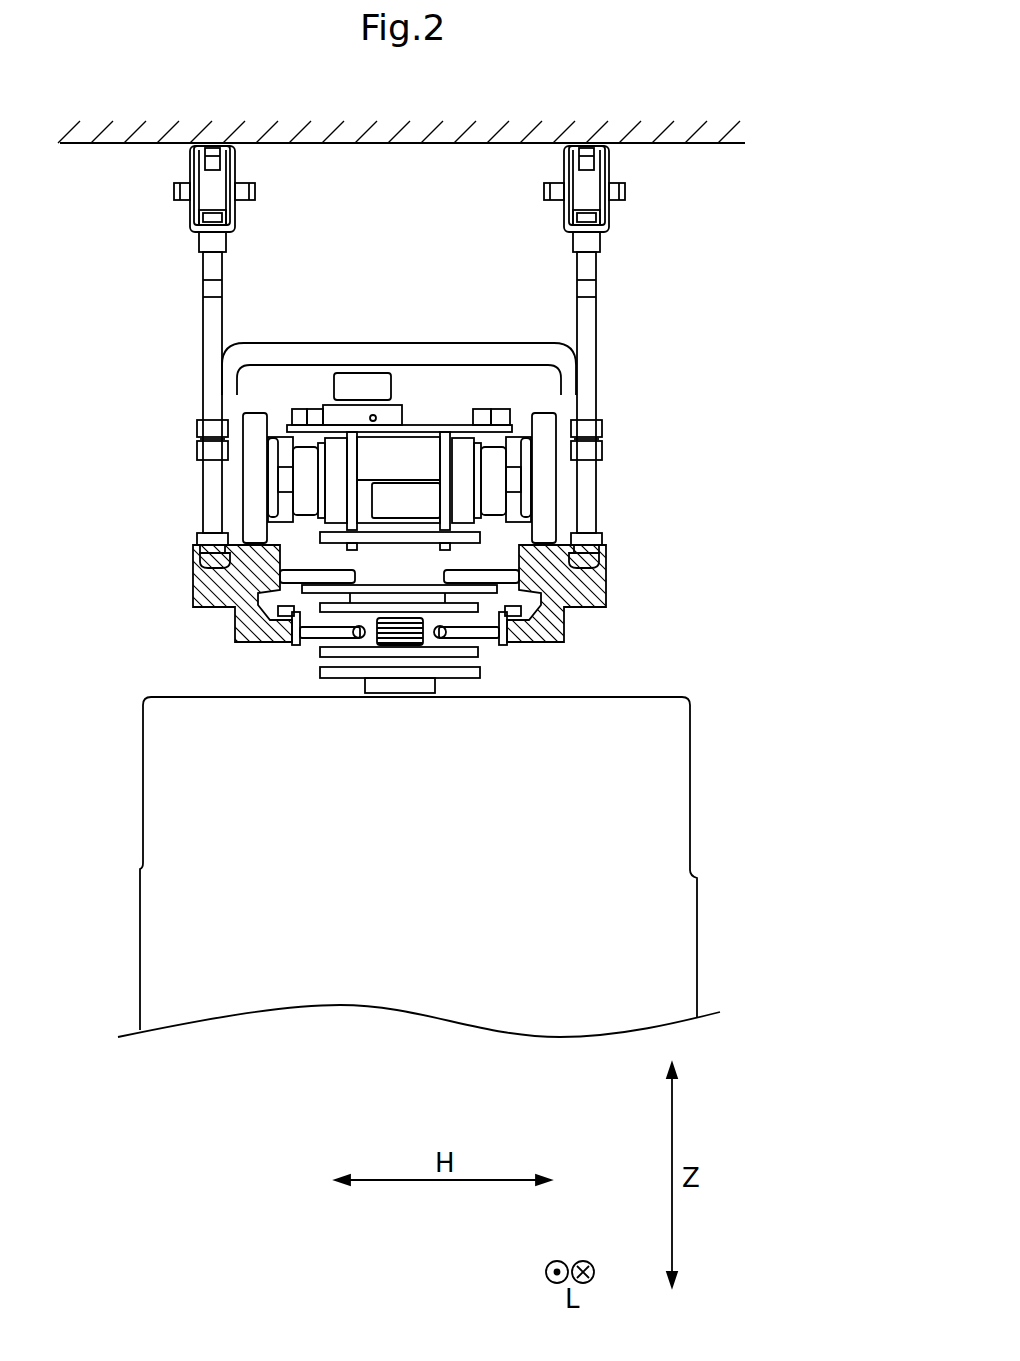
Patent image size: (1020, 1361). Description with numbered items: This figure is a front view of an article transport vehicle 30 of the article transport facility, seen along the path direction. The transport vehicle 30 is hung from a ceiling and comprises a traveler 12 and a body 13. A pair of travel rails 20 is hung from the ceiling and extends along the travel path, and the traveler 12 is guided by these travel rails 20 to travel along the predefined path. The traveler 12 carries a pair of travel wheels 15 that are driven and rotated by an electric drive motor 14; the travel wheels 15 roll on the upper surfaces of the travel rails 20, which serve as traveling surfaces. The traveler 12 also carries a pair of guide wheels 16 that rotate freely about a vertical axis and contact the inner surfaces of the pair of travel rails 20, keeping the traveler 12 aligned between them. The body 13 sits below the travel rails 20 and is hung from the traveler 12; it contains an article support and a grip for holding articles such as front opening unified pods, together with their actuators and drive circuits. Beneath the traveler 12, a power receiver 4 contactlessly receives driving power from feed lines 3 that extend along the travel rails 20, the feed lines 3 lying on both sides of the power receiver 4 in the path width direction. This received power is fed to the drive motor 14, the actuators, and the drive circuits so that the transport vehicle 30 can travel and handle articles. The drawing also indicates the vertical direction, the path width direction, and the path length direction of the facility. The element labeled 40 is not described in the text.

The feed line 3 is at (330, 632).
The power receiver 4 is at (443, 703).
The traveler 12 is at (432, 395).
The body 13 is at (673, 917).
The drive motor 14 is at (280, 443).
The travel wheel 15 is at (250, 487).
The guide wheel 16 is at (272, 577).
The travel rail 20 is at (193, 575).
The transport vehicle 30 is at (712, 392).
The spring 40 is at (412, 638).